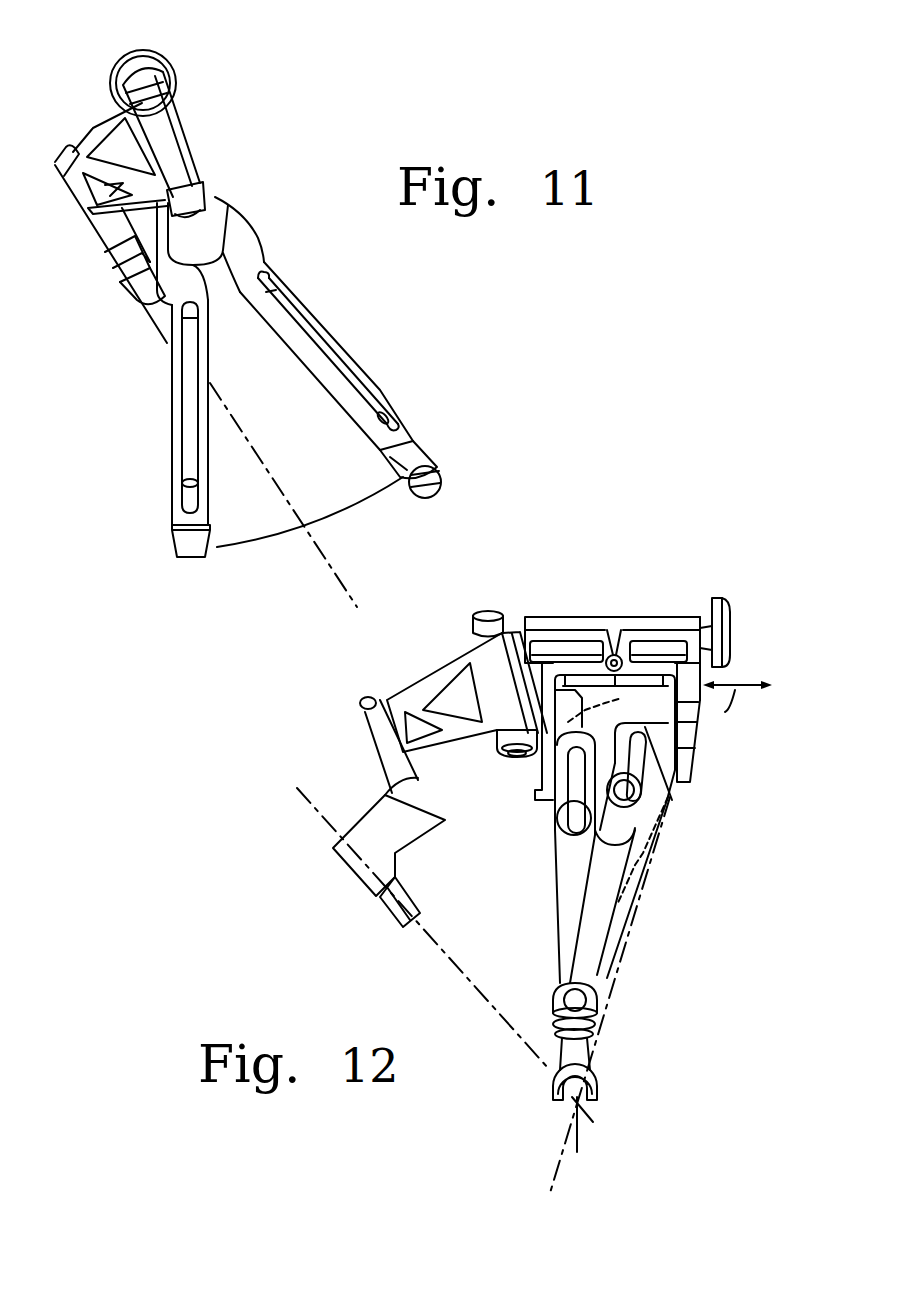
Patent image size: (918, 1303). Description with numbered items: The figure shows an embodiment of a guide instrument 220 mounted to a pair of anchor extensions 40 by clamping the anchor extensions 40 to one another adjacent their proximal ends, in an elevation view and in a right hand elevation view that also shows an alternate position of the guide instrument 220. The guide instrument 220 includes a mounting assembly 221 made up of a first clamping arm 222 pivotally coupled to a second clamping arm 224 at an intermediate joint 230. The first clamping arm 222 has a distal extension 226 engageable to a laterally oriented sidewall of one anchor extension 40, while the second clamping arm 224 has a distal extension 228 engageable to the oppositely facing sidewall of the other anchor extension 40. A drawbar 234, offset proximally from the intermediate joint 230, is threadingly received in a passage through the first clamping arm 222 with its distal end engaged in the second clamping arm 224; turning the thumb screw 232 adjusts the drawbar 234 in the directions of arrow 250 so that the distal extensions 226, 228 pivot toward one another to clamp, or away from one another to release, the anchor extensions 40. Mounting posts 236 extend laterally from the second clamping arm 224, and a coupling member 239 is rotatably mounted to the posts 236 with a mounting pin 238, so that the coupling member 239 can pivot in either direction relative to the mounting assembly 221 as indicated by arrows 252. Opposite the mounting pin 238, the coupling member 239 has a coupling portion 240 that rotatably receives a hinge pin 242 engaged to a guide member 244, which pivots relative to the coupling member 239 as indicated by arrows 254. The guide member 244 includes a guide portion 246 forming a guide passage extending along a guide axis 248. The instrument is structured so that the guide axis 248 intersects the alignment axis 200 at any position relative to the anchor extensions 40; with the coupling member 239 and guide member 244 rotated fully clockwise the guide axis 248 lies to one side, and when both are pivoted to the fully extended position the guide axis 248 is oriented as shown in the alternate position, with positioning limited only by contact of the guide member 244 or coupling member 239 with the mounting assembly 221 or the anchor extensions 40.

In FIG. 11, the anchor extension 40 is at (336, 341).
In FIG. 12, the anchor extension 40 is at (556, 898).
In FIG. 11, the alignment axis 200 is at (249, 548).
In FIG. 12, the alignment axis 200 is at (577, 1135).
In FIG. 11, the guide instrument 220 is at (154, 48).
In FIG. 12, the guide instrument 220 is at (600, 583).
In FIG. 12, the mounting assembly 221 is at (566, 611).
In FIG. 12, the first clamping arm 222 is at (693, 617).
In FIG. 12, the second clamping arm 224 is at (585, 617).
In FIG. 12, the distal extension 226 is at (694, 753).
In FIG. 11, the distal extension 228 is at (210, 232).
In FIG. 12, the distal extension 228 is at (540, 795).
In FIG. 12, the intermediate joint 230 is at (621, 655).
In FIG. 11, the thumb screw 232 is at (174, 73).
In FIG. 12, the thumb screw 232 is at (718, 598).
In FIG. 12, the drawbar 234 is at (614, 640).
In FIG. 11, the mounting post 236 is at (150, 88).
In FIG. 12, the mounting post 236 is at (474, 630).
In FIG. 12, the mounting pin 238 is at (510, 762).
In FIG. 11, the coupling member 239 is at (96, 126).
In FIG. 12, the coupling member 239 is at (423, 677).
In FIG. 11, the coupling portion 240 is at (63, 188).
In FIG. 12, the coupling portion 240 is at (365, 712).
In FIG. 11, the hinge pin 242 is at (60, 150).
In FIG. 12, the hinge pin 242 is at (368, 697).
In FIG. 11, the guide member 244 is at (118, 278).
In FIG. 12, the guide member 244 is at (360, 818).
In FIG. 11, the guide portion 246 is at (160, 320).
In FIG. 12, the guide portion 246 is at (383, 905).
In FIG. 11, the guide axis 248 is at (256, 446).
In FIG. 12, the guide axis 248 is at (632, 993).
In FIG. 12, the arrow 250 is at (737, 708).
In FIG. 12, the arrows 252 is at (495, 603).
In FIG. 12, the arrows 254 is at (383, 771).